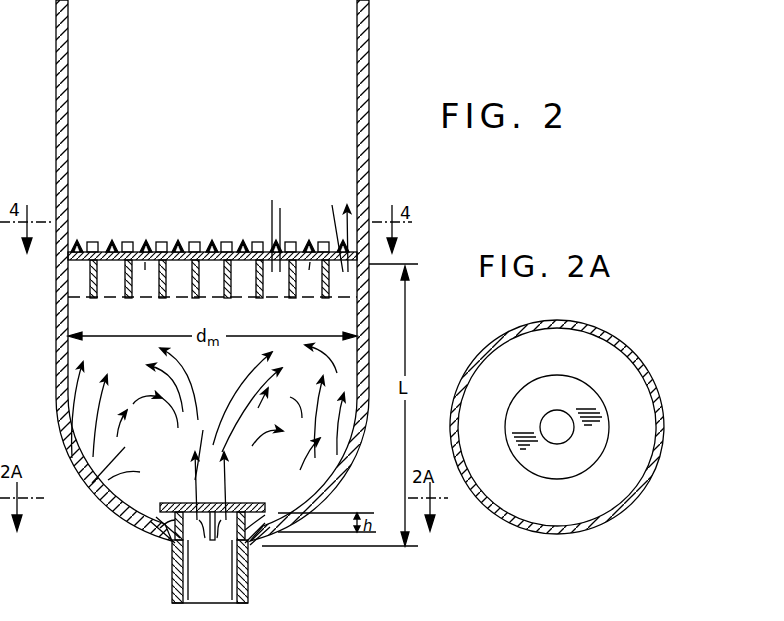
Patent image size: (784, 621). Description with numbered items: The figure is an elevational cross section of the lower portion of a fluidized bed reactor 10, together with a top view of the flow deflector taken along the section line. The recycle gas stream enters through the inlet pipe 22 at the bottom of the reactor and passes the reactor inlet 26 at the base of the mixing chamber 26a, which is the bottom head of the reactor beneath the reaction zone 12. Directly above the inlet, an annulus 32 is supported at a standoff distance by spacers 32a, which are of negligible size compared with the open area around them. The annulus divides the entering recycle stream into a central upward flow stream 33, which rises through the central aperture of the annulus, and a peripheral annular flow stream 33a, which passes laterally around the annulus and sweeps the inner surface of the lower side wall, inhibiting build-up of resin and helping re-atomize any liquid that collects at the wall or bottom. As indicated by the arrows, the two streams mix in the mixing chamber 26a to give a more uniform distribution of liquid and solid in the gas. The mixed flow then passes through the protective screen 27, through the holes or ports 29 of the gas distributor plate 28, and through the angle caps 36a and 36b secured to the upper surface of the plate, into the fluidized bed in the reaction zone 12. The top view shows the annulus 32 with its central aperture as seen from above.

In FIG. 2, the reactor 10 is at (368, 188).
In FIG. 2A, the reactor 10 is at (501, 336).
In FIG. 2, the reaction zone 12 is at (212, 87).
In FIG. 2, the inlet pipe 22 is at (172, 584).
In FIG. 2, the reactor inlet 26 is at (250, 558).
In FIG. 2, the mixing chamber 26a is at (115, 471).
In FIG. 2, the protective screen 27 is at (270, 298).
In FIG. 2, the gas distributor plate 28 is at (93, 241).
In FIG. 2, the holes or ports 29 is at (145, 262).
In FIG. 2, the annulus 32 is at (248, 503).
In FIG. 2A, the annulus 32 is at (570, 388).
In FIG. 2, the spacers 32a is at (222, 536).
In FIG. 2, the central upward flow stream 33 is at (192, 430).
In FIG. 2, the peripheral annular flow stream 33a is at (150, 529).
In FIG. 2, the angle cap 36a is at (112, 246).
In FIG. 2, the angle cap 36b is at (213, 247).